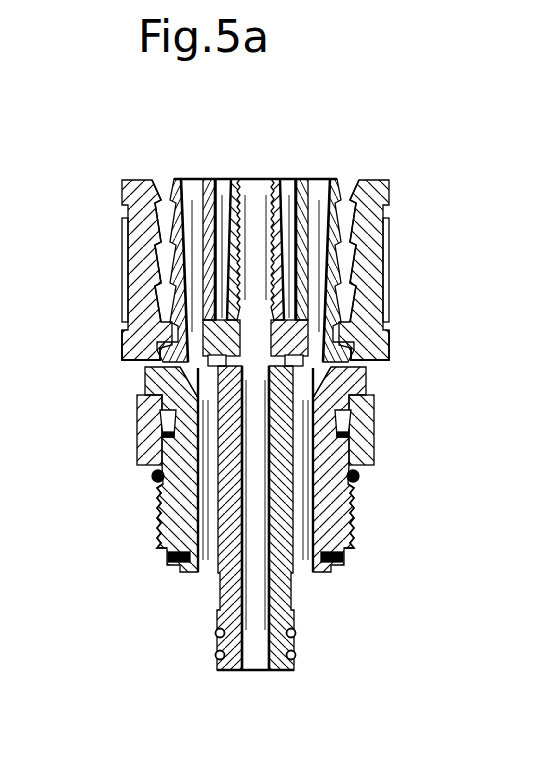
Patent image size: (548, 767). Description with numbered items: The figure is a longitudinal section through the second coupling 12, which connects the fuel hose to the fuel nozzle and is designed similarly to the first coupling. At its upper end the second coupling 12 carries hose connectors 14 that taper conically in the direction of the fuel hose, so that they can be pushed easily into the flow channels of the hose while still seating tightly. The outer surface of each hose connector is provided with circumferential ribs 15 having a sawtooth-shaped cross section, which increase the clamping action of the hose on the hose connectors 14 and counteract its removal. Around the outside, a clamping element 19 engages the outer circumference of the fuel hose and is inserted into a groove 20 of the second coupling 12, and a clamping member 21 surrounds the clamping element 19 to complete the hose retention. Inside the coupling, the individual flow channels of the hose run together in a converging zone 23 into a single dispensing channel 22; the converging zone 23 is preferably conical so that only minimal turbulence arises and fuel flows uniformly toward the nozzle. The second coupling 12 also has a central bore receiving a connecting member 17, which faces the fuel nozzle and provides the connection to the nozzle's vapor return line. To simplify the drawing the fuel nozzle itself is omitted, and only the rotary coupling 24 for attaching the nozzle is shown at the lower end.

The second coupling 12 is at (371, 370).
The hose connectors 14 is at (179, 177).
The circumferential ribs 15 is at (170, 246).
The connecting member 17 is at (275, 177).
The clamping element 19 is at (122, 188).
The groove 20 is at (122, 350).
The clamping member 21 is at (122, 283).
The dispensing channel 22 is at (210, 519).
The converging zone 23 is at (200, 375).
The rotary coupling 24 is at (360, 447).